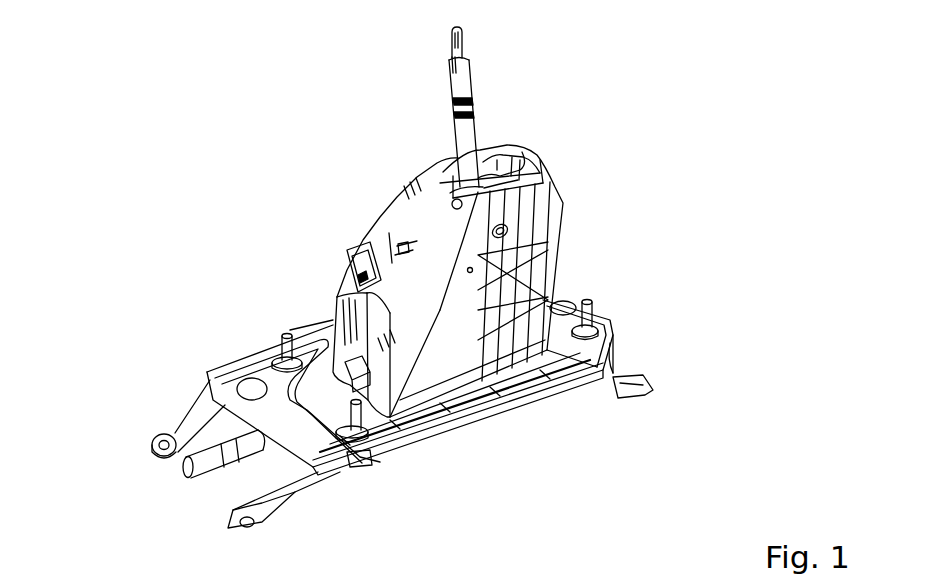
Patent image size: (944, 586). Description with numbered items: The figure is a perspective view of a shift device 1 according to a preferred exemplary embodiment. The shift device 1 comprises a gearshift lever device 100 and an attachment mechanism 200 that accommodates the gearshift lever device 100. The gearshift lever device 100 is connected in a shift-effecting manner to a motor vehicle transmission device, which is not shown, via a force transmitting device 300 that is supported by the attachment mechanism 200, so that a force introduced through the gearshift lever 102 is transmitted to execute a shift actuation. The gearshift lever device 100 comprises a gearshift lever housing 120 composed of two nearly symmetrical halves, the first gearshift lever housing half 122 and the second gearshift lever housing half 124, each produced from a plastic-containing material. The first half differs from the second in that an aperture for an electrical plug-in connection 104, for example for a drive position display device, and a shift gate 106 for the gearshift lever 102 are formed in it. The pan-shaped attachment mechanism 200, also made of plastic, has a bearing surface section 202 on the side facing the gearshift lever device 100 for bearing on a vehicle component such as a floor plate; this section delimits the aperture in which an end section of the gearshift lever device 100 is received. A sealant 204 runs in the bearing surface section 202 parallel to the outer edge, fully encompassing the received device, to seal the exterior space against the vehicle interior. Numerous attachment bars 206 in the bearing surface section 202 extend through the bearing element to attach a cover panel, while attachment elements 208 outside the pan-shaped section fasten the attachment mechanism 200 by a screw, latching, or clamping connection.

The shift device 1 is at (177, 123).
The gearshift lever device 100 is at (364, 208).
The gearshift lever 102 is at (462, 85).
The electrical plug-in connection 104 is at (362, 272).
The shift gate 106 is at (508, 160).
The gearshift lever housing 120 is at (569, 182).
The first gearshift lever housing half 122 is at (421, 176).
The second gearshift lever housing half 124 is at (541, 240).
The attachment mechanism 200 is at (184, 353).
The bearing surface section 202 is at (372, 465).
The sealant 204 is at (490, 398).
The attachment bars 206 is at (267, 340).
The attachment elements 208 is at (160, 437).
The force transmitting device 300 is at (181, 473).